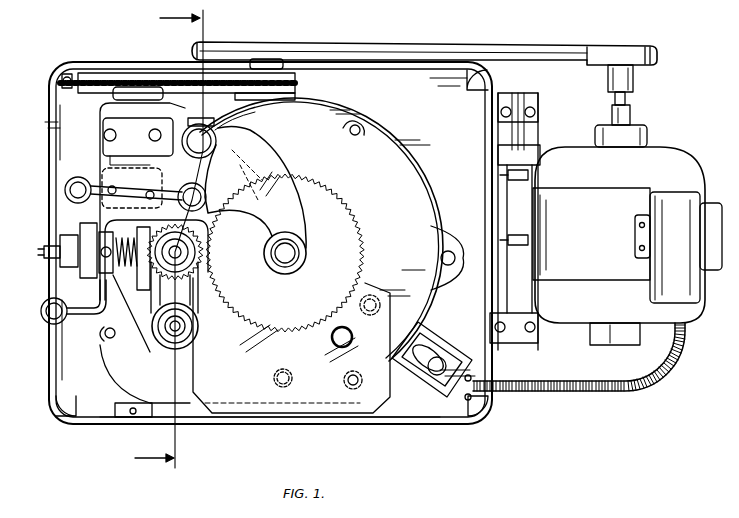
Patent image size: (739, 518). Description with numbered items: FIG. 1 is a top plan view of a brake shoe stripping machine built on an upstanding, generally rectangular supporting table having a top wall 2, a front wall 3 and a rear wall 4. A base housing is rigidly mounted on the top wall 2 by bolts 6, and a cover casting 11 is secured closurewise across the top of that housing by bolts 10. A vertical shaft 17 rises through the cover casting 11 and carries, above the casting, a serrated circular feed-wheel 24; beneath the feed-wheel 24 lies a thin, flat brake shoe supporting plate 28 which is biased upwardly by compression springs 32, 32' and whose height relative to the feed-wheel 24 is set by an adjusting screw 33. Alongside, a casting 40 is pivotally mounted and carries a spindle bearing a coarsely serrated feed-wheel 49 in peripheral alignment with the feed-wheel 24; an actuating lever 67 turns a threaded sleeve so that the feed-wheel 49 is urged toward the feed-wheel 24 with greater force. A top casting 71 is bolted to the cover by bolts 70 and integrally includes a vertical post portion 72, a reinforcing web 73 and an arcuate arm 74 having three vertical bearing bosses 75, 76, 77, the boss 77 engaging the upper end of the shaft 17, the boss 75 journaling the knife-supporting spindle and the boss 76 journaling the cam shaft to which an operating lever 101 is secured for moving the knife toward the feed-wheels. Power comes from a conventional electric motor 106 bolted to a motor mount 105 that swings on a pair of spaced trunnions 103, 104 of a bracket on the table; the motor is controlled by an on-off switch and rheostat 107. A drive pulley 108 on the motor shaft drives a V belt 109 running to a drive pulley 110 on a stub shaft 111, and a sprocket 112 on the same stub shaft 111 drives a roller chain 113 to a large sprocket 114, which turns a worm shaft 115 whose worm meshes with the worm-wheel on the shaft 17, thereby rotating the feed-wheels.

The top wall 2 is at (66, 108).
The front wall 3 is at (92, 49).
The rear wall 4 is at (92, 421).
The bolts 6 is at (454, 250).
The bolts 10 is at (350, 130).
The cover casting 11 is at (400, 166).
The vertical shaft 17 is at (282, 272).
The feed-wheel 24 is at (356, 234).
The brake shoe supporting plate 28 is at (390, 404).
The compression spring 32 is at (266, 380).
The compression spring 32' is at (386, 300).
The adjusting screw 33 is at (353, 336).
The casting 40 is at (206, 332).
The feed-wheel 49 is at (203, 250).
The actuating lever 67 is at (84, 320).
The bolts 70 is at (103, 132).
The top casting 71 is at (244, 127).
The vertical post portion 72 is at (168, 150).
The reinforcing web 73 is at (124, 165).
The arcuate arm 74 is at (284, 172).
The bearing boss 75 is at (213, 150).
The bearing boss 76 is at (208, 190).
The bearing boss 77 is at (300, 262).
The operating lever 101 is at (80, 176).
The trunnion 103 is at (540, 110).
The trunnion 104 is at (538, 340).
The motor mount 105 is at (540, 150).
The electric motor 106 is at (668, 152).
The on-off switch and rheostat 107 is at (447, 397).
The drive pulley 108 is at (656, 62).
The V belt 109 is at (524, 46).
The drive pulley 110 is at (342, 42).
The stub shaft 111 is at (298, 94).
The sprocket 112 is at (292, 72).
The roller chain 113 is at (182, 74).
The large sprocket 114 is at (64, 74).
The worm shaft 115 is at (133, 418).